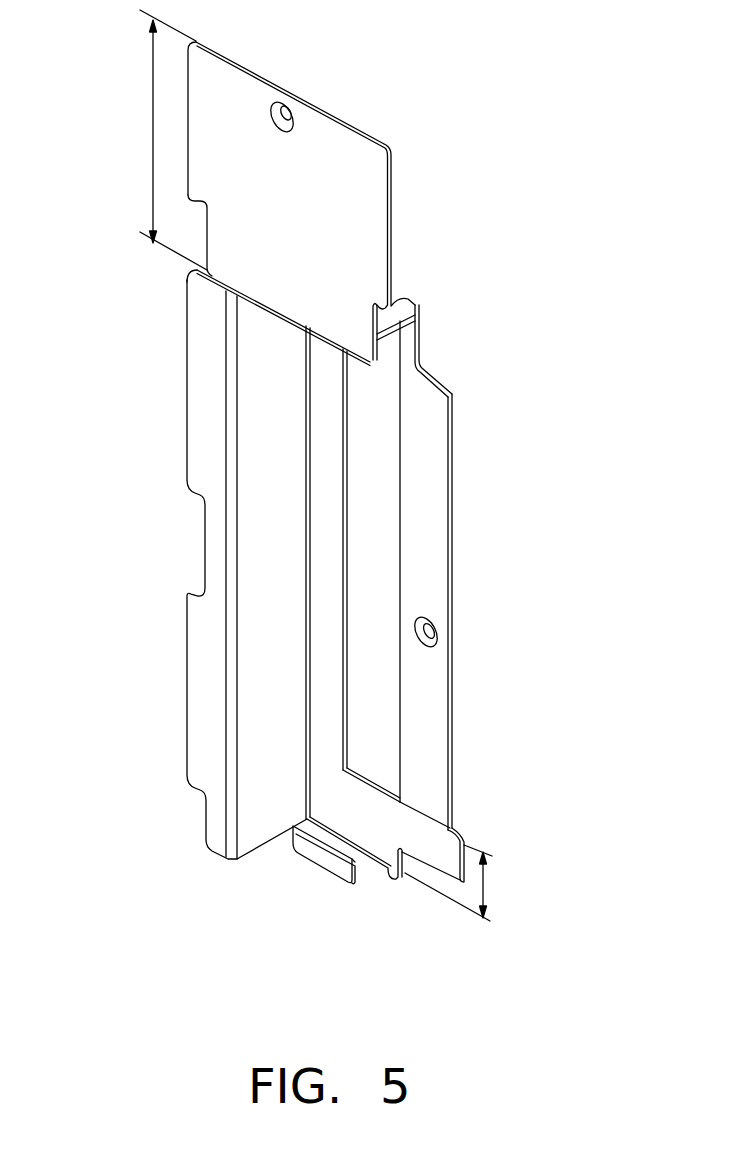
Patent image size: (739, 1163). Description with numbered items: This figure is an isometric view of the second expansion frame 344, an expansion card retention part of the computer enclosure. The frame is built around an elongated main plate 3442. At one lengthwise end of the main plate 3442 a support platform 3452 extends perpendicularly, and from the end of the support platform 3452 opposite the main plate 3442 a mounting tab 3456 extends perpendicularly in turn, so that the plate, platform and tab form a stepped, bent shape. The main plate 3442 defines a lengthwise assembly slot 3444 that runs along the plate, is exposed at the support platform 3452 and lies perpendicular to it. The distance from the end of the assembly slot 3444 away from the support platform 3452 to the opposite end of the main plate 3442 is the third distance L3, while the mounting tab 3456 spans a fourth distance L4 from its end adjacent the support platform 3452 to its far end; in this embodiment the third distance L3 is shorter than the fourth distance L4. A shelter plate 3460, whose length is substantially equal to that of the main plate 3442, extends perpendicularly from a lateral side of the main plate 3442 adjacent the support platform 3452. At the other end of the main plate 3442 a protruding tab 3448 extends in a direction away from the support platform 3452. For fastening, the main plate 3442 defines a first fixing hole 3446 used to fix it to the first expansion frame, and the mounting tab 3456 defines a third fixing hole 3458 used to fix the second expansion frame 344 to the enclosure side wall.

The second expansion frame 344 is at (336, 476).
The mounting tab 3456 is at (360, 197).
The third fixing hole 3458 is at (282, 108).
The support platform 3452 is at (404, 305).
The shelter plate 3460 is at (265, 416).
The assembly slot 3444 is at (375, 545).
The main plate 3442 is at (428, 460).
The first fixing hole 3446 is at (433, 643).
The protruding tab 3448 is at (322, 860).
The third distance L3 is at (466, 883).
The fourth distance L4 is at (160, 140).